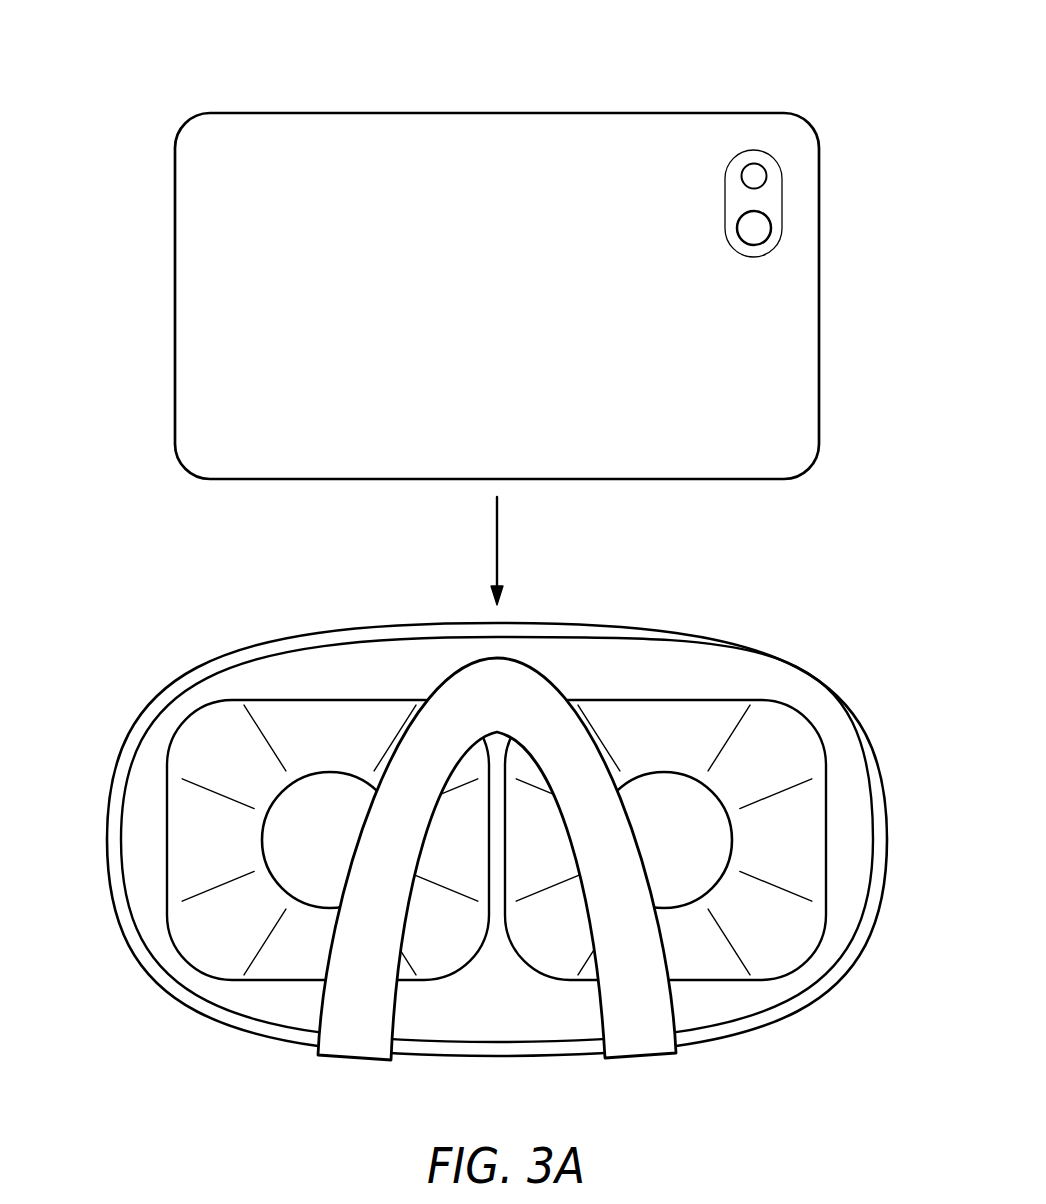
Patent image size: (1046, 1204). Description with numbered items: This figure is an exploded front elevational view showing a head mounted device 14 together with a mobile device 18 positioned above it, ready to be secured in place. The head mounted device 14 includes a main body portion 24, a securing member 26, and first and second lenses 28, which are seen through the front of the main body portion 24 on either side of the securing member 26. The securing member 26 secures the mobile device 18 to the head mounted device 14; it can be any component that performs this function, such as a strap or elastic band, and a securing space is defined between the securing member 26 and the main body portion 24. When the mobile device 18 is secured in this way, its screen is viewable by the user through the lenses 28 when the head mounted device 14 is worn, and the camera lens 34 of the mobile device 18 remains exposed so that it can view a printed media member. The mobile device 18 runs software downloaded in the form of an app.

The head mounted device 14 is at (111, 658).
The mobile device 18 is at (355, 112).
The main body portion 24 is at (792, 663).
The securing member 26 is at (643, 1003).
The first and second lenses 28 is at (280, 842).
The camera lens 34 is at (753, 228).